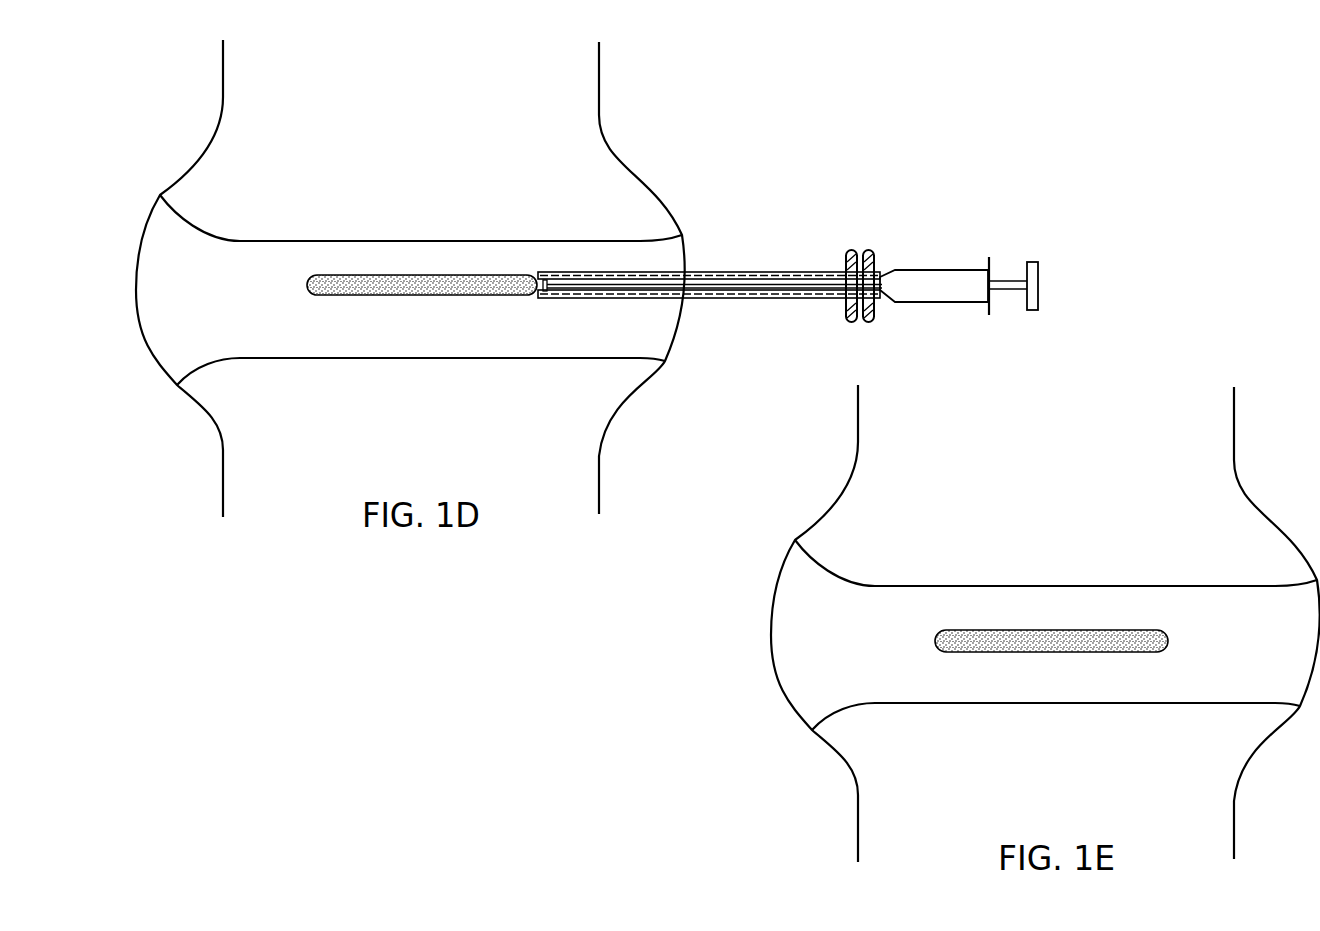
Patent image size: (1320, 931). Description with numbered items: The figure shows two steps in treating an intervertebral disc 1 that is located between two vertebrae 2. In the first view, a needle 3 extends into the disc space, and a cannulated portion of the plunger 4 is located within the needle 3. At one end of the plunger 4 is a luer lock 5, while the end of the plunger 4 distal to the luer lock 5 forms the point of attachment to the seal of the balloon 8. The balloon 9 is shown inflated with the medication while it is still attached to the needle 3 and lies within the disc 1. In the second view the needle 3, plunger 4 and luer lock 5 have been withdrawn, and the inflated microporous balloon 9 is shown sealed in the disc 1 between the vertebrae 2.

In FIG. 1D, the intervertebral disc 1 is at (158, 345).
In FIG. 1D, the vertebrae 2 is at (190, 183).
In FIG. 1D, the needle 3 is at (690, 268).
In FIG. 1D, the plunger 4 is at (861, 272).
In FIG. 1D, the luer lock 5 is at (882, 278).
In FIG. 1D, the seal of the balloon 8 is at (556, 289).
In FIG. 1D, the balloon 9 is at (470, 275).
In FIG. 1E, the balloon 9 is at (1050, 630).